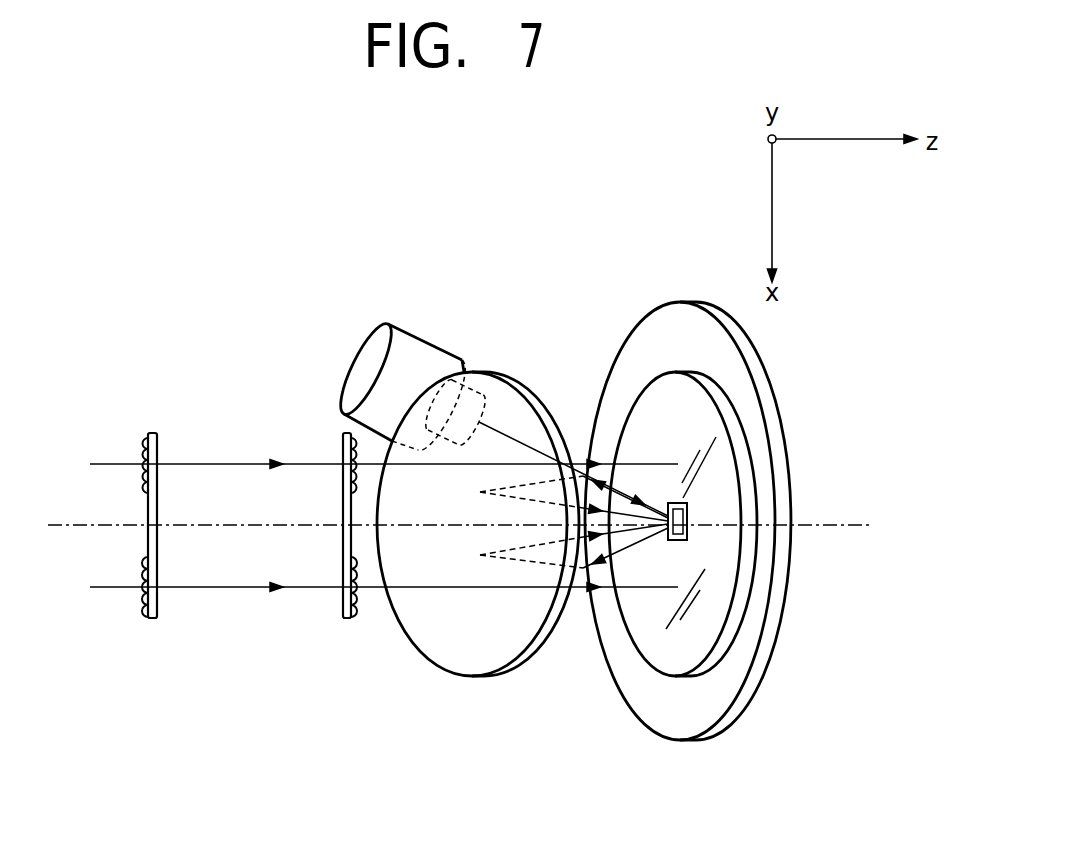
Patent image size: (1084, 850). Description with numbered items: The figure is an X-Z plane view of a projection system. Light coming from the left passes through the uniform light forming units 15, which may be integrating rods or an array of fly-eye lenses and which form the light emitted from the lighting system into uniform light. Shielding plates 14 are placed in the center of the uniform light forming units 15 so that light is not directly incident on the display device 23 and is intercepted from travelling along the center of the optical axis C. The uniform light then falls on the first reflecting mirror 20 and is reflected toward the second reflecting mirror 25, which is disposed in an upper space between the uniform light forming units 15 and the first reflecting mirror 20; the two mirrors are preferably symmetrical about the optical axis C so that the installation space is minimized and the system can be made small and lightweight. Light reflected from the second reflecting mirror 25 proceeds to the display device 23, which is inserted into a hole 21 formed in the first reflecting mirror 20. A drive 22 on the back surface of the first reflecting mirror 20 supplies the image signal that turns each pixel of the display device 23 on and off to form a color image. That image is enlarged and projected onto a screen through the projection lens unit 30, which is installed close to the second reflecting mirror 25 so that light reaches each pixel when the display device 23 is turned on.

The shielding plates 14 is at (148, 500).
The uniform light forming units 15 is at (348, 620).
The first reflecting mirror 20 is at (686, 640).
The hole 21 is at (686, 505).
The drive 22 is at (784, 489).
The display device 23 is at (687, 538).
The second reflecting mirror 25 is at (507, 403).
The projection lens unit 30 is at (415, 350).
The optical axis C is at (101, 527).